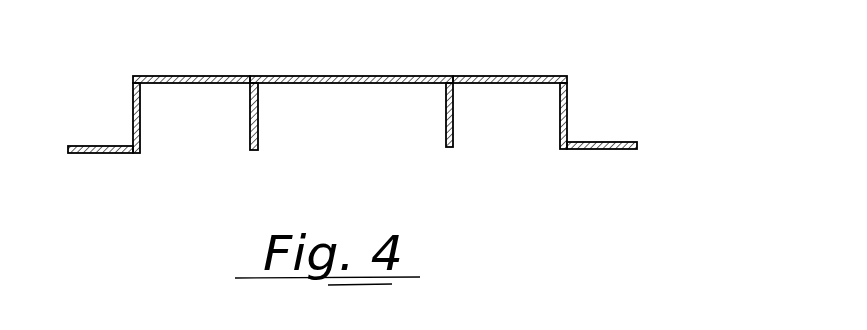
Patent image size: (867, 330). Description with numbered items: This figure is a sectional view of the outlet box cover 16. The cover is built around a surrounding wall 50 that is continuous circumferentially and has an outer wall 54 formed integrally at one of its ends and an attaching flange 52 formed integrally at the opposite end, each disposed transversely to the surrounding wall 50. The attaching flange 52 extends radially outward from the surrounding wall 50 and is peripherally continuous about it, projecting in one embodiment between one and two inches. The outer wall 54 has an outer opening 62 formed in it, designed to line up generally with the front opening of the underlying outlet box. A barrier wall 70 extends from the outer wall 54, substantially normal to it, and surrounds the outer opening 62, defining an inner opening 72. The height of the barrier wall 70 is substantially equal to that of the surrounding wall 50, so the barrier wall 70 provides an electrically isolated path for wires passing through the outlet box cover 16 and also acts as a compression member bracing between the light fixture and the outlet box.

The outlet box cover 16 is at (642, 38).
The surrounding wall 50 is at (133, 107).
The attaching flange 52 is at (106, 153).
The outer wall 54 is at (200, 78).
The outer opening 62 is at (355, 75).
The barrier wall 70 is at (248, 107).
The inner opening 72 is at (350, 148).